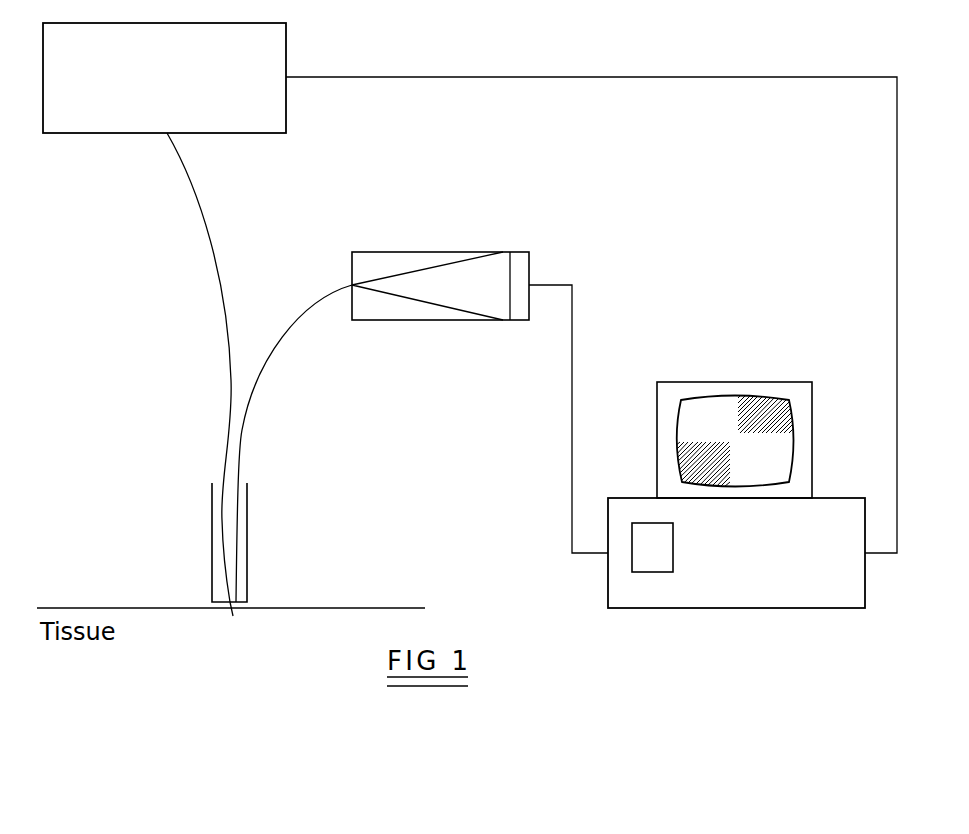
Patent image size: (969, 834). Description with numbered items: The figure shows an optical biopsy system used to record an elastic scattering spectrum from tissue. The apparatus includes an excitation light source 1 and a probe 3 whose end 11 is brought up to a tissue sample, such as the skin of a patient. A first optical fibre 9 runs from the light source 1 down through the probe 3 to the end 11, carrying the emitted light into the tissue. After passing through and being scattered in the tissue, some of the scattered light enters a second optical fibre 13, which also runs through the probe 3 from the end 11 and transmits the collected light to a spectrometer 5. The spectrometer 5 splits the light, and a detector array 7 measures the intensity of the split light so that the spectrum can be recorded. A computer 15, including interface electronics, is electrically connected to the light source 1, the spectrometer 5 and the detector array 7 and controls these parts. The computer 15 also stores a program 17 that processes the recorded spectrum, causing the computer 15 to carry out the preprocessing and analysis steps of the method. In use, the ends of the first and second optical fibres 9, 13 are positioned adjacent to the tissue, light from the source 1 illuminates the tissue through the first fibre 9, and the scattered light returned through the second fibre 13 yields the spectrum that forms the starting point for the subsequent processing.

The excitation light source 1 is at (79, 133).
The probe 3 is at (212, 543).
The spectrometer 5 is at (410, 252).
The detector array 7 is at (517, 252).
The first optical fibre 9 is at (225, 300).
The end of the probe 11 is at (233, 616).
The second optical fibre 13 is at (241, 428).
The computer 15 is at (807, 608).
The program 17 is at (657, 572).